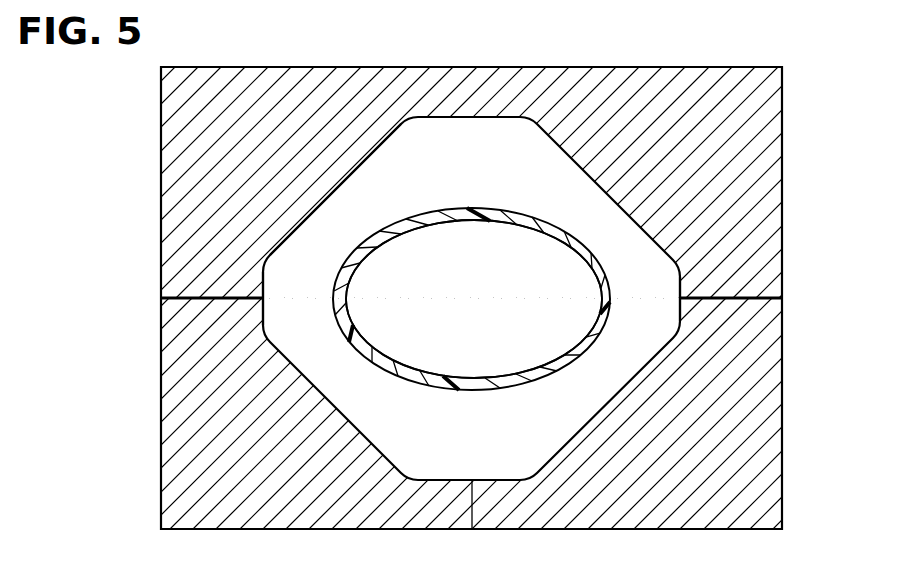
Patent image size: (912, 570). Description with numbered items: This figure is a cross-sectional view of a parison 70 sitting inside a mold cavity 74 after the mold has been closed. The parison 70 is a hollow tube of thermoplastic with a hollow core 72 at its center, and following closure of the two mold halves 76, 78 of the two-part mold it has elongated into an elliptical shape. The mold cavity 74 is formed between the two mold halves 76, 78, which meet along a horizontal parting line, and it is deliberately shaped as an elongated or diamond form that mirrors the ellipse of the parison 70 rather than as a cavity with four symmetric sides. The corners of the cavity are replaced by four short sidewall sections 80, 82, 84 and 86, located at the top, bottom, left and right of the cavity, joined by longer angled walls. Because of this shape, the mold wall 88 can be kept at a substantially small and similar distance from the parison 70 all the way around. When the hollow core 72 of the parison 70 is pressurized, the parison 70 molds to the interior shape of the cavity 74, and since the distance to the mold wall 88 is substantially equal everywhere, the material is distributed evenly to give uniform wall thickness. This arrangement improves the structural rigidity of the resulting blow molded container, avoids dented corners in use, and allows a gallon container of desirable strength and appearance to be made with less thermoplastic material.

The parison 70 is at (453, 206).
The hollow core 72 is at (473, 283).
The mold cavity 74 is at (577, 207).
The mold half 76 is at (782, 185).
The mold half 78 is at (782, 375).
The short sidewall section 80 is at (469, 117).
The short sidewall section 82 is at (472, 529).
The short sidewall section 84 is at (262, 262).
The short sidewall section 86 is at (681, 284).
The mold wall 88 is at (333, 187).